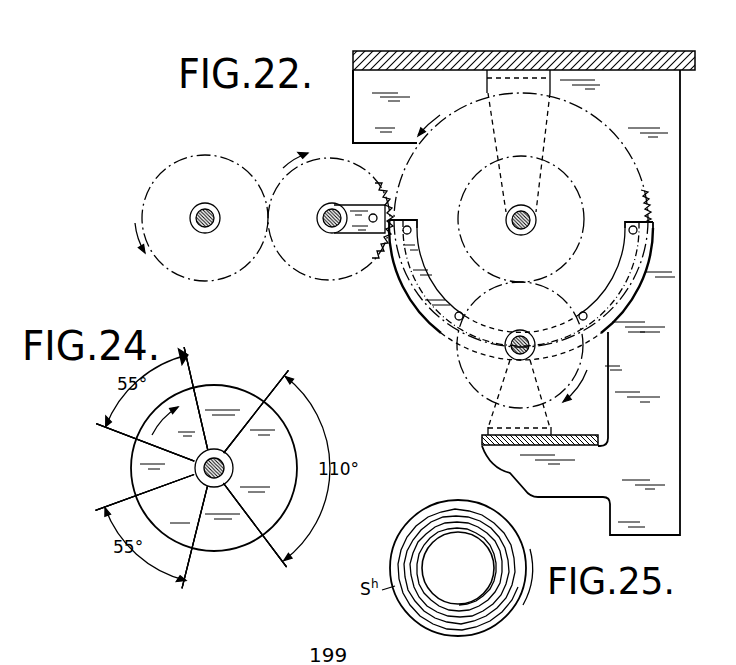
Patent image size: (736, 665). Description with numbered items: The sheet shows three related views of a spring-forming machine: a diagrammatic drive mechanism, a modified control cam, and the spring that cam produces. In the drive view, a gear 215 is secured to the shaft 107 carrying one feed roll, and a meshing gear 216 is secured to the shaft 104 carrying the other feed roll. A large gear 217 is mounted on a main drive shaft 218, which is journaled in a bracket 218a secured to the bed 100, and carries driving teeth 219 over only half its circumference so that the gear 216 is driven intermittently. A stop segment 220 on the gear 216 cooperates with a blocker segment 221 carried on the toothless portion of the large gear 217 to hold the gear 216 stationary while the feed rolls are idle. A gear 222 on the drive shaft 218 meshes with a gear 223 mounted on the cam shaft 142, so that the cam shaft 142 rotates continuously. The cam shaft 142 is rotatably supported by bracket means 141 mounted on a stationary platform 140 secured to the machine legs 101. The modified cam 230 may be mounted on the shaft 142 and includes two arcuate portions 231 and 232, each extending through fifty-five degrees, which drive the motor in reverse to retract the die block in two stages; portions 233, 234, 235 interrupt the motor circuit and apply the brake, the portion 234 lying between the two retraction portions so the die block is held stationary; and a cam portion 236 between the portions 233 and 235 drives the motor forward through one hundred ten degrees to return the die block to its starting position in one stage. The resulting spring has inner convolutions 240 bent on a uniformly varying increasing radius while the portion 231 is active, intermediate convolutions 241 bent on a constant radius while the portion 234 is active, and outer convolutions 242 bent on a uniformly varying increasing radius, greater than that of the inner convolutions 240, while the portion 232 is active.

In FIG. 22, the bed 100 is at (445, 52).
In FIG. 22, the machine legs 101 is at (675, 423).
In FIG. 22, the shaft 104 is at (326, 208).
In FIG. 22, the shaft 107 is at (206, 204).
In FIG. 22, the stationary platform 140 is at (482, 440).
In FIG. 22, the bracket means 141 is at (496, 416).
In FIG. 22, the shaft 142 is at (519, 359).
In FIG. 24, the shaft 142 is at (231, 463).
In FIG. 22, the gear 215 is at (167, 170).
In FIG. 22, the gear 216 is at (308, 280).
In FIG. 22, the large gear 217 is at (610, 128).
In FIG. 22, the main drive shaft 218 is at (516, 232).
In FIG. 22, the bracket 218a is at (488, 93).
In FIG. 22, the teeth 219 is at (645, 197).
In FIG. 22, the stop segment 220 is at (358, 233).
In FIG. 22, the blocker segment 221 is at (422, 312).
In FIG. 22, the gear 222 is at (582, 196).
In FIG. 22, the gear 223 is at (461, 378).
In FIG. 24, the cam 230 is at (197, 467).
In FIG. 24, the arcuate portion 231 is at (167, 402).
In FIG. 24, the arcuate portion 232 is at (167, 533).
In FIG. 24, the arcuate portion 233 is at (233, 402).
In FIG. 24, the arcuate portion 234 is at (132, 483).
In FIG. 24, the arcuate portion 235 is at (228, 551).
In FIG. 24, the cam portion 236 is at (297, 492).
In FIG. 25, the inner convolutions 240 is at (433, 588).
In FIG. 25, the intermediate convolutions 241 is at (485, 523).
In FIG. 25, the outer convolutions 242 is at (502, 626).